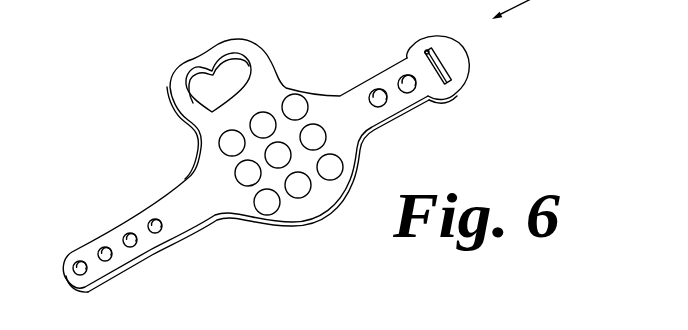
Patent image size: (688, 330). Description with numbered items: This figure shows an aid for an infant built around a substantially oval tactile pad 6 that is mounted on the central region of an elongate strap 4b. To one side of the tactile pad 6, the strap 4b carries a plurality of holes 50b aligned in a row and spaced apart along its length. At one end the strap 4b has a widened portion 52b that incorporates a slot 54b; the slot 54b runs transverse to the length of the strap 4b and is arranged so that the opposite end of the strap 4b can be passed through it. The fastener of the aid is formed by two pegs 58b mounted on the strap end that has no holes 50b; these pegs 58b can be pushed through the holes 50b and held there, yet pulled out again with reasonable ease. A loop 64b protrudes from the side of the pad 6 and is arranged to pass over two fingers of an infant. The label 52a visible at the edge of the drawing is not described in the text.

The tactile pad 6 is at (319, 149).
The elongate strap 4b is at (124, 192).
The holes 50b is at (88, 274).
The head portion 52a is at (73, 0).
The widened portion 52b is at (481, 90).
The slot 54b is at (443, 63).
The pegs 58b is at (378, 90).
The loop 64b is at (260, 57).